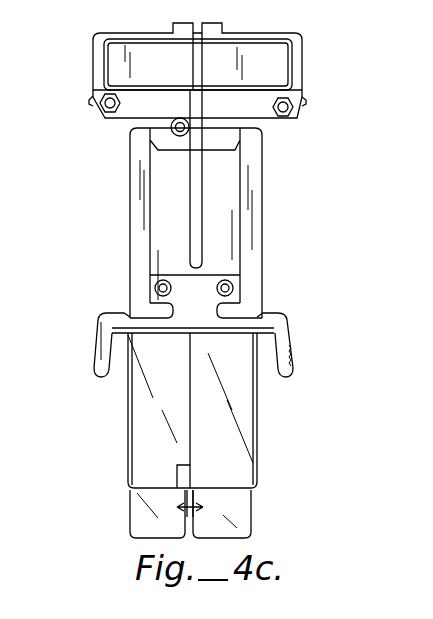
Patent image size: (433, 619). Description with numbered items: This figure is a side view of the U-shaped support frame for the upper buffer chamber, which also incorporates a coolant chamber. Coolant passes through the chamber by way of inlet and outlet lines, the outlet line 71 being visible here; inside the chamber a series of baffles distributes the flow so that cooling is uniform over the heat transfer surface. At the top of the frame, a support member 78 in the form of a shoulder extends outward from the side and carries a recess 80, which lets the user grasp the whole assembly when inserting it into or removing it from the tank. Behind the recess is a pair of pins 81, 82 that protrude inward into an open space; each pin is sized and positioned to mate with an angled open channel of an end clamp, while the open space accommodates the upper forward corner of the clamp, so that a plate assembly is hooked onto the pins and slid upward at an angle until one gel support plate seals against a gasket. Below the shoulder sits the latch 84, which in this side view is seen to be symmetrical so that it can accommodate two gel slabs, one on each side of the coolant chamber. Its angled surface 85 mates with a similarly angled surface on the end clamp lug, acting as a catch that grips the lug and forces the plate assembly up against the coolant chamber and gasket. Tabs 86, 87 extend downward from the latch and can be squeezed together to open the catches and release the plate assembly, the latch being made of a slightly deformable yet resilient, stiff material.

The outlet line 71 is at (171, 130).
The support member 78 is at (302, 58).
The recess 80 is at (245, 53).
The pin 81 is at (100, 110).
The pin 82 is at (290, 120).
The latch 84 is at (184, 340).
The angled surface 85 is at (128, 312).
The tab 86 is at (96, 360).
The tab 87 is at (294, 348).